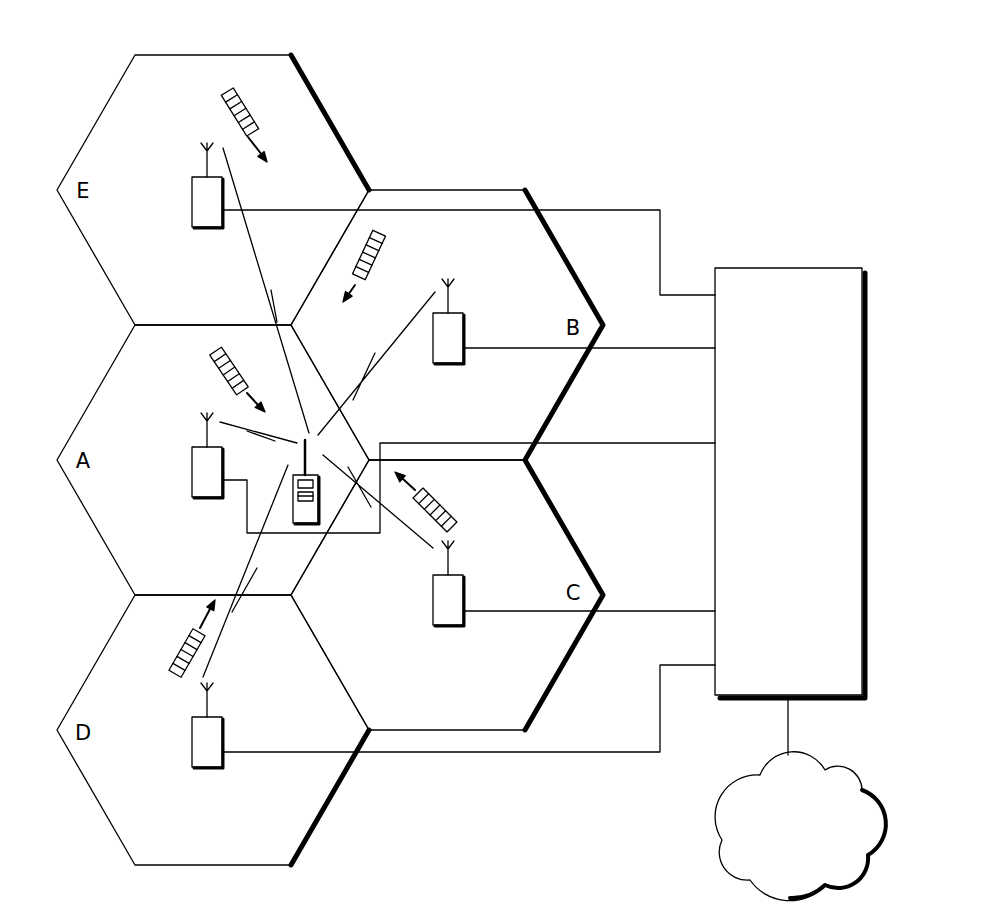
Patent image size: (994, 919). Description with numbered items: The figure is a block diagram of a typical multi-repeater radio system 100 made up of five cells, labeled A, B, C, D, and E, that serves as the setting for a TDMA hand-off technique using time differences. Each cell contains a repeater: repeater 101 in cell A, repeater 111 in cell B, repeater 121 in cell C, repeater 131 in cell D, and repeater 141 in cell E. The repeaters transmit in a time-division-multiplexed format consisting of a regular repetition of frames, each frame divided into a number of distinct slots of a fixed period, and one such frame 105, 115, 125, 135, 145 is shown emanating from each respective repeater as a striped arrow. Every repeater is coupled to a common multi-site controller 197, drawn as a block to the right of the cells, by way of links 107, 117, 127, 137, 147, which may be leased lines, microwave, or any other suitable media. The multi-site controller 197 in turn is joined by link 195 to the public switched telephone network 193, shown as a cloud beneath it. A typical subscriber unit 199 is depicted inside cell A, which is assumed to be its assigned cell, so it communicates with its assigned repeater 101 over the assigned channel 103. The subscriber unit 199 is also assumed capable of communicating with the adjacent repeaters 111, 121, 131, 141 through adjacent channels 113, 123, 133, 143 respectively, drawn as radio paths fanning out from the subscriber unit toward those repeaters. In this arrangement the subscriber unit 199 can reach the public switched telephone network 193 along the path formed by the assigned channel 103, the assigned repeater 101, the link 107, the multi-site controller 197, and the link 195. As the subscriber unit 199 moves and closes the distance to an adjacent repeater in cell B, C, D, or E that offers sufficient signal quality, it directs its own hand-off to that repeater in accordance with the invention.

The multi-repeater radio system 100 is at (716, 146).
The repeater 101 is at (192, 470).
The assigned channel 103 is at (250, 432).
The frame 105 is at (212, 364).
The link 107 is at (650, 443).
The repeater 111 is at (458, 334).
The adjacent channel 113 is at (385, 365).
The frame 115 is at (380, 253).
The link 117 is at (648, 348).
The repeater 121 is at (433, 605).
The adjacent channel 123 is at (418, 540).
The frame 125 is at (452, 515).
The link 127 is at (660, 611).
The repeater 131 is at (192, 745).
The adjacent channel 133 is at (227, 637).
The frame 135 is at (175, 652).
The link 137 is at (593, 753).
The repeater 141 is at (190, 203).
The adjacent channel 143 is at (250, 262).
The frame 145 is at (252, 106).
The link 147 is at (615, 213).
The public switched telephone network 193 is at (716, 845).
The link 195 is at (790, 728).
The multi-site controller 197 is at (780, 268).
The subscriber unit 199 is at (300, 525).